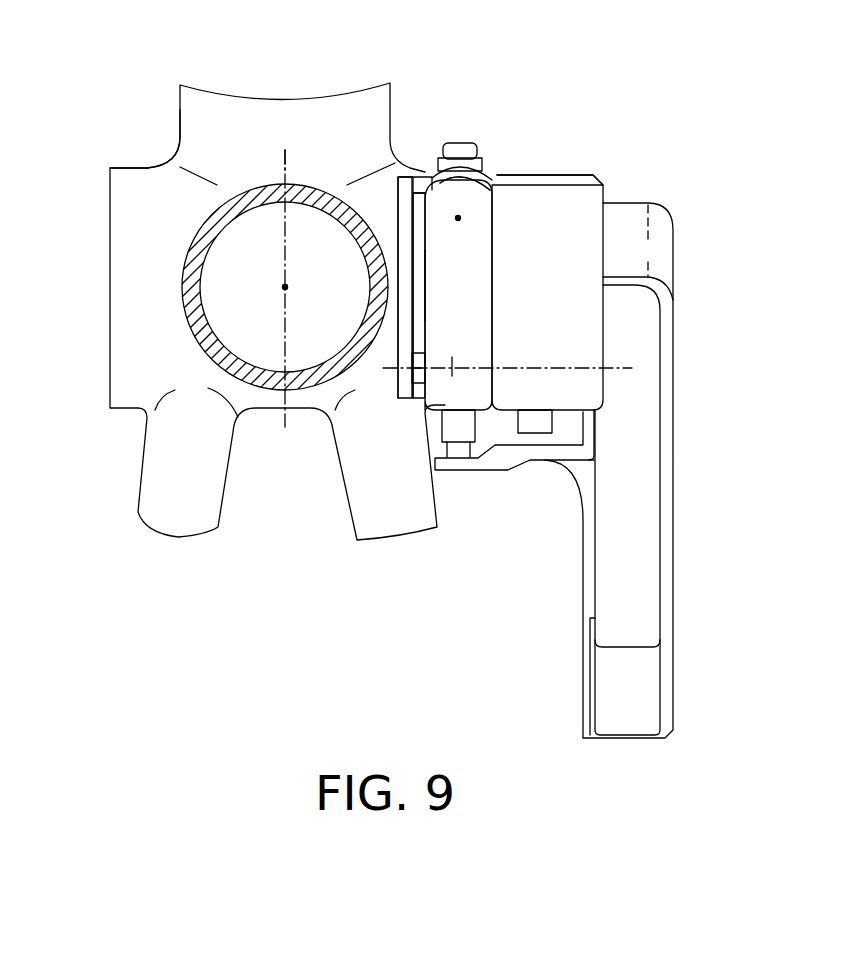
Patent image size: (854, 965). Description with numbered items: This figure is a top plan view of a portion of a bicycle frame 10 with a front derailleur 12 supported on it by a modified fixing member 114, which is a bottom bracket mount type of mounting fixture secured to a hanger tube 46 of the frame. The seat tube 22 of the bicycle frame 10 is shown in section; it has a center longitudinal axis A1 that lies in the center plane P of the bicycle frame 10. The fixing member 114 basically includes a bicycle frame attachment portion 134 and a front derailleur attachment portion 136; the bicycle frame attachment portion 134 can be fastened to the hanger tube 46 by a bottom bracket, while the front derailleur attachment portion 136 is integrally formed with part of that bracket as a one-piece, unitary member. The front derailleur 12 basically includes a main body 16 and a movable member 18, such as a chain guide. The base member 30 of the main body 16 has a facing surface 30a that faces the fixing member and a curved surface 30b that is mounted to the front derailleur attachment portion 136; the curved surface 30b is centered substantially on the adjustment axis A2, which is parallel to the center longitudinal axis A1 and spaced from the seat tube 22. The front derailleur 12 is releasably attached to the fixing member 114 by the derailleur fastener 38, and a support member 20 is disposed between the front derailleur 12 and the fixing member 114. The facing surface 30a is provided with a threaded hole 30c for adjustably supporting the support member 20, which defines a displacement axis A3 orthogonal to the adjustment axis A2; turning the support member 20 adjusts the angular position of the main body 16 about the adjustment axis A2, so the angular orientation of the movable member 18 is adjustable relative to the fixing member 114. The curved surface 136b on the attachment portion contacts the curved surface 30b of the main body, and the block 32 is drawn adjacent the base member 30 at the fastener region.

The bicycle frame 10 is at (130, 465).
The front derailleur 12 is at (636, 189).
The main body 16 is at (548, 518).
The movable member 18 is at (676, 443).
The support member 20 is at (418, 404).
The seat tube 22 is at (205, 348).
The base member 30 is at (462, 419).
The facing surface 30a is at (423, 283).
The curved surface 30b is at (434, 165).
The threaded hole 30c is at (451, 358).
The sensor block 32 is at (539, 418).
The derailleur fastener 38 is at (458, 143).
The hanger tube 46 is at (130, 167).
The fixing member 114 is at (392, 50).
The bicycle frame attachment portion 134 is at (396, 195).
The front derailleur attachment portion 136 is at (418, 163).
The plate dome portion 136b is at (460, 183).
The center plane P is at (280, 167).
The center longitudinal axis A1 is at (285, 287).
The adjustment axis A2 is at (458, 218).
The displacement axis A3 is at (518, 368).